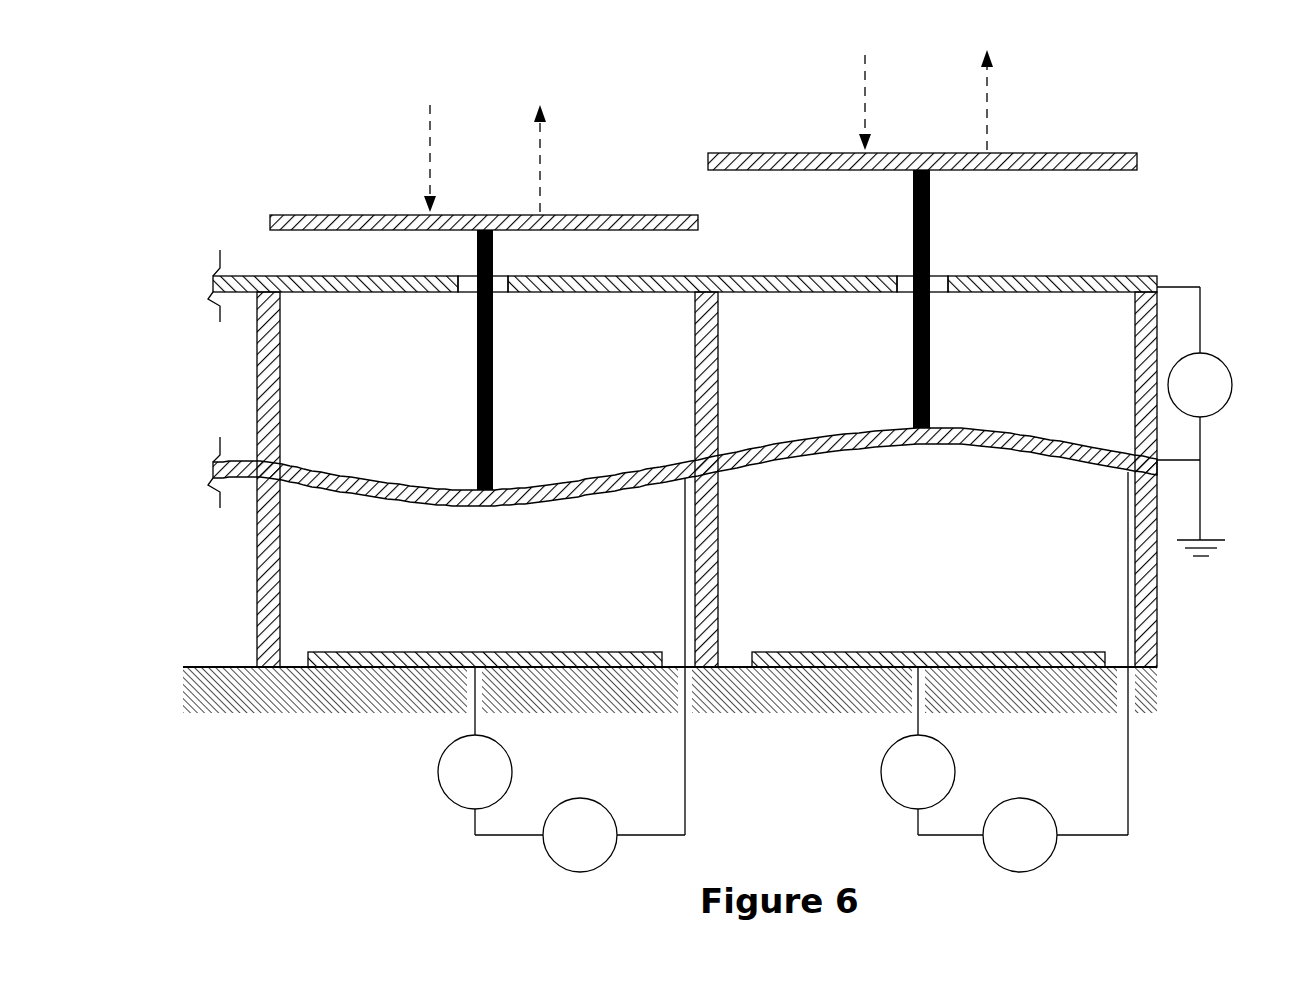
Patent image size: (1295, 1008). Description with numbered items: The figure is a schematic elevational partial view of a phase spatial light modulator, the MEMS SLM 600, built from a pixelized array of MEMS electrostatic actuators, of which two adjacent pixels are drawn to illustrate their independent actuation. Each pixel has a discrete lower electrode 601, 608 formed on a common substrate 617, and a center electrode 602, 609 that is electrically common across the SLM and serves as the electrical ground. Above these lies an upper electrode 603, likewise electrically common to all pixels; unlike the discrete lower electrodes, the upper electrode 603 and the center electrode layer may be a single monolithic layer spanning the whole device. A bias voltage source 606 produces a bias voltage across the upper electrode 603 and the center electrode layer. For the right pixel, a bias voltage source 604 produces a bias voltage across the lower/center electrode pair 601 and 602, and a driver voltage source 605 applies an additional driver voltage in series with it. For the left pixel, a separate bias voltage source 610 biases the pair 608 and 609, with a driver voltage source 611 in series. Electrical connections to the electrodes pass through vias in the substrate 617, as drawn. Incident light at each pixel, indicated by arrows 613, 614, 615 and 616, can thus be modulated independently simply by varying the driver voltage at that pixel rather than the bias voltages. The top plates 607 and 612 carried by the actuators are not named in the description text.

The MEMS SLM 600 is at (288, 97).
The lower electrode 601 is at (844, 652).
The center electrode 602 is at (854, 451).
The upper electrode 603 is at (1066, 276).
The bias voltage source 604 is at (880, 762).
The driver voltage source 605 is at (1020, 798).
The bias voltage source 606 is at (1232, 387).
The top plate 607 is at (1131, 153).
The lower electrode 608 is at (386, 652).
The center electrode 609 is at (640, 490).
The bias voltage source 610 is at (438, 772).
The driver voltage source 611 is at (600, 800).
The top plate 612 is at (283, 215).
The incident light 613 is at (865, 85).
The incident light 614 is at (987, 103).
The incident light 615 is at (430, 160).
The incident light 616 is at (540, 160).
The substrate 617 is at (326, 714).